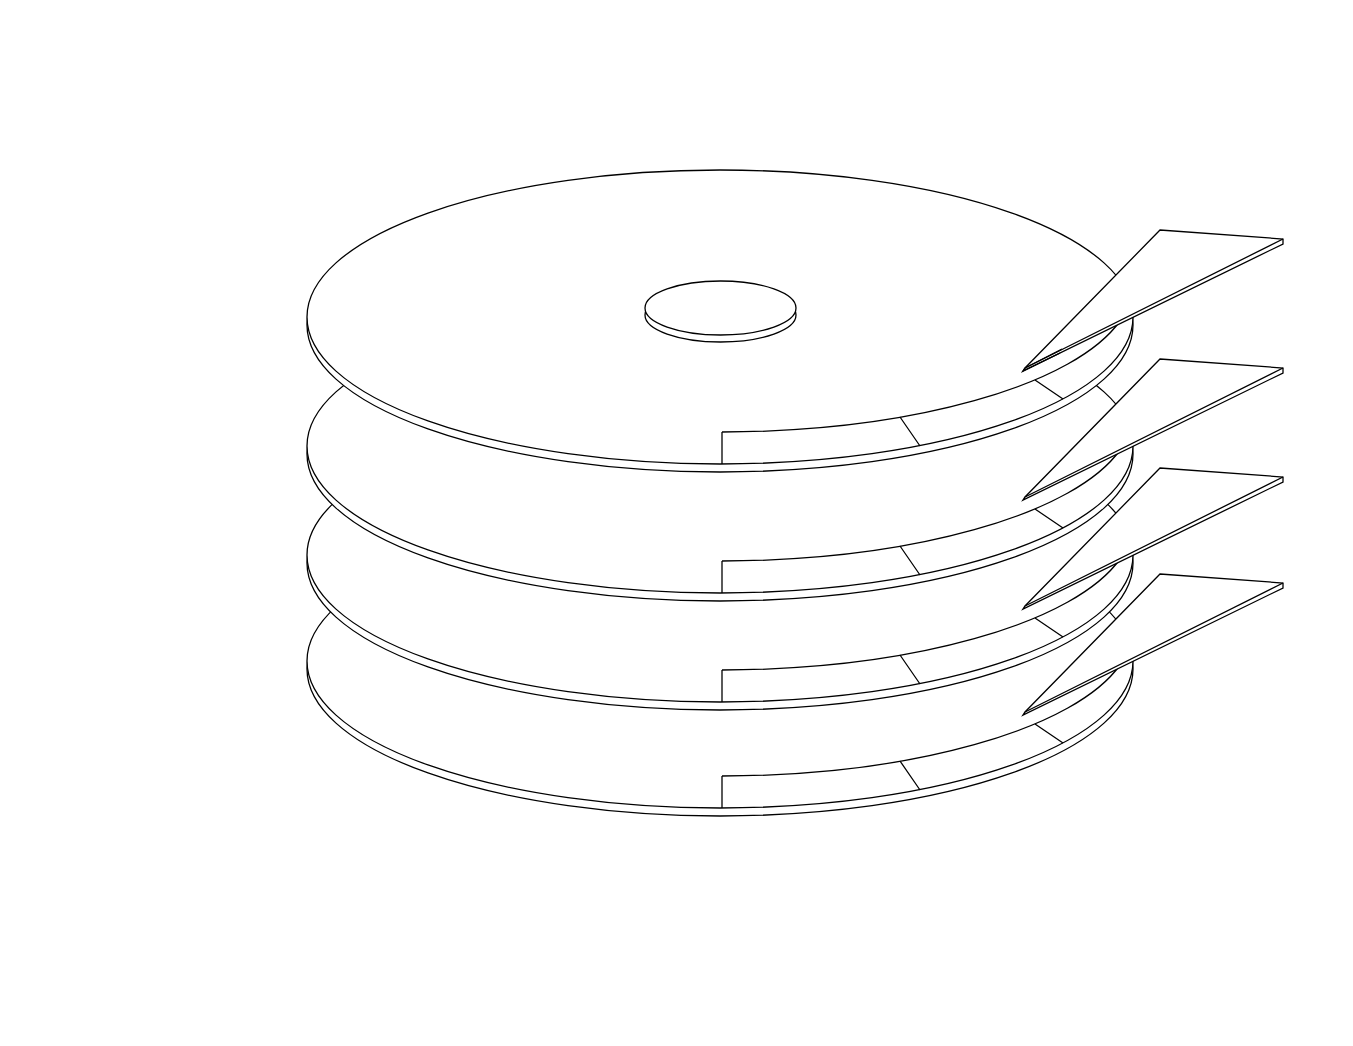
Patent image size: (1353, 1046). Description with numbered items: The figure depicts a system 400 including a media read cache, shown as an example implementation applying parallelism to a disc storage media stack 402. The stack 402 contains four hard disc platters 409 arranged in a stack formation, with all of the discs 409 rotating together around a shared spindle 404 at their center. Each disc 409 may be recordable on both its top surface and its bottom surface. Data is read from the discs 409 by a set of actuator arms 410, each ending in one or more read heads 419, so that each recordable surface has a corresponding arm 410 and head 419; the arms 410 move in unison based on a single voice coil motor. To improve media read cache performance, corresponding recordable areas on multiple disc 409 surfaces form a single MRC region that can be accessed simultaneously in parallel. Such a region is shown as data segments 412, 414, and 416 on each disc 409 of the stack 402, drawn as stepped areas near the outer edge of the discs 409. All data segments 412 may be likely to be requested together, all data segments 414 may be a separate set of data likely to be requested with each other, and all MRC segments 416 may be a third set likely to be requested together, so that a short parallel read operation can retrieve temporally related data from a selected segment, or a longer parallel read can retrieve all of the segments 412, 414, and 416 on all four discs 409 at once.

The system 400 is at (169, 76).
The disc storage media stack 402 is at (290, 244).
The shared spindle 404 is at (732, 281).
The hard disc platter 409 is at (435, 210).
The actuator arm 410 is at (1217, 233).
The read head 419 is at (1027, 366).
The data segment 412 is at (1097, 733).
The data segment 414 is at (1003, 773).
The MRC segment 416 is at (833, 803).